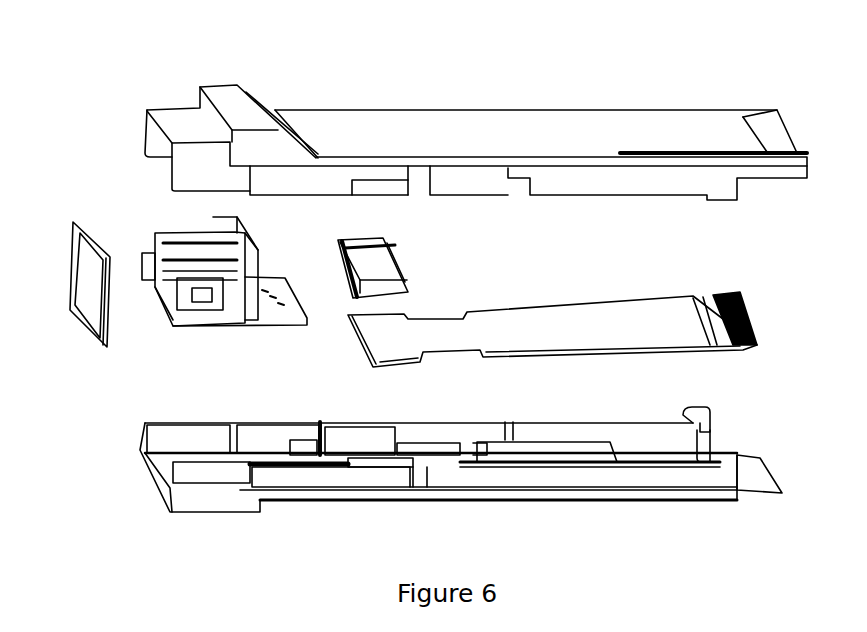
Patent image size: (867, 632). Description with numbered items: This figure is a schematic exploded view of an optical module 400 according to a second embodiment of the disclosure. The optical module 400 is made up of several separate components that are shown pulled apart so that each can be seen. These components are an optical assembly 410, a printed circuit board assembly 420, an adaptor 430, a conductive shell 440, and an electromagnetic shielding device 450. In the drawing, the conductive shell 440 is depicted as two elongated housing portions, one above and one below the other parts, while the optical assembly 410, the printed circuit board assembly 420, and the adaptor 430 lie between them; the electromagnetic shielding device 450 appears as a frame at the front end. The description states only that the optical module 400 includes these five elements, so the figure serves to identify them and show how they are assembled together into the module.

The optical module 400 is at (487, 46).
The optical assembly 410 is at (385, 252).
The printed circuit board assembly 420 is at (485, 320).
The adaptor 430 is at (197, 312).
The conductive shell 440 is at (647, 127).
The electromagnetic shielding device 450 is at (85, 223).